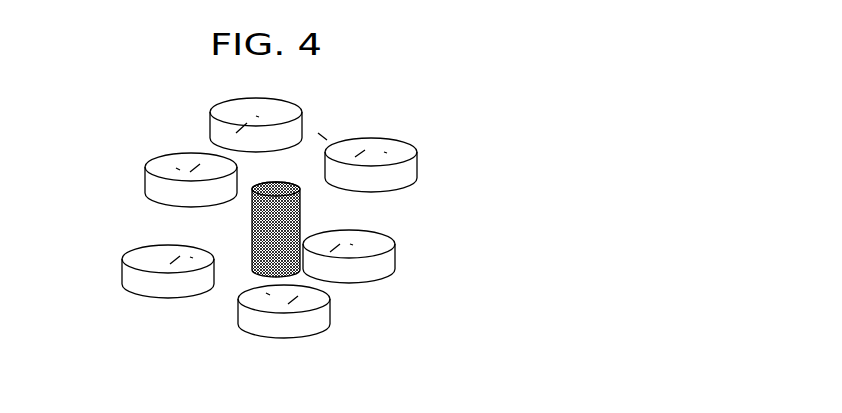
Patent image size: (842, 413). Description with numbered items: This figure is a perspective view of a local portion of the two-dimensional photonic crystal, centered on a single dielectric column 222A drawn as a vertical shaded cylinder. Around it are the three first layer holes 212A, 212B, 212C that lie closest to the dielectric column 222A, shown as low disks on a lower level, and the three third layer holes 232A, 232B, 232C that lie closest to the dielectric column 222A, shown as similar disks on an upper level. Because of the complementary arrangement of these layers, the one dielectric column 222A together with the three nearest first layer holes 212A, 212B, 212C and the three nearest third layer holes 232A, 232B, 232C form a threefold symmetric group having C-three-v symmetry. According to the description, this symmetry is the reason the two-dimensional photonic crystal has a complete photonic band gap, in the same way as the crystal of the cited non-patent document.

The third layer hole 232B is at (300, 112).
The third layer hole 232C is at (163, 192).
The third layer hole 232A is at (387, 175).
The dielectric column 222A is at (300, 220).
The first layer hole 212B is at (358, 266).
The first layer hole 212A is at (162, 287).
The first layer hole 212C is at (310, 320).